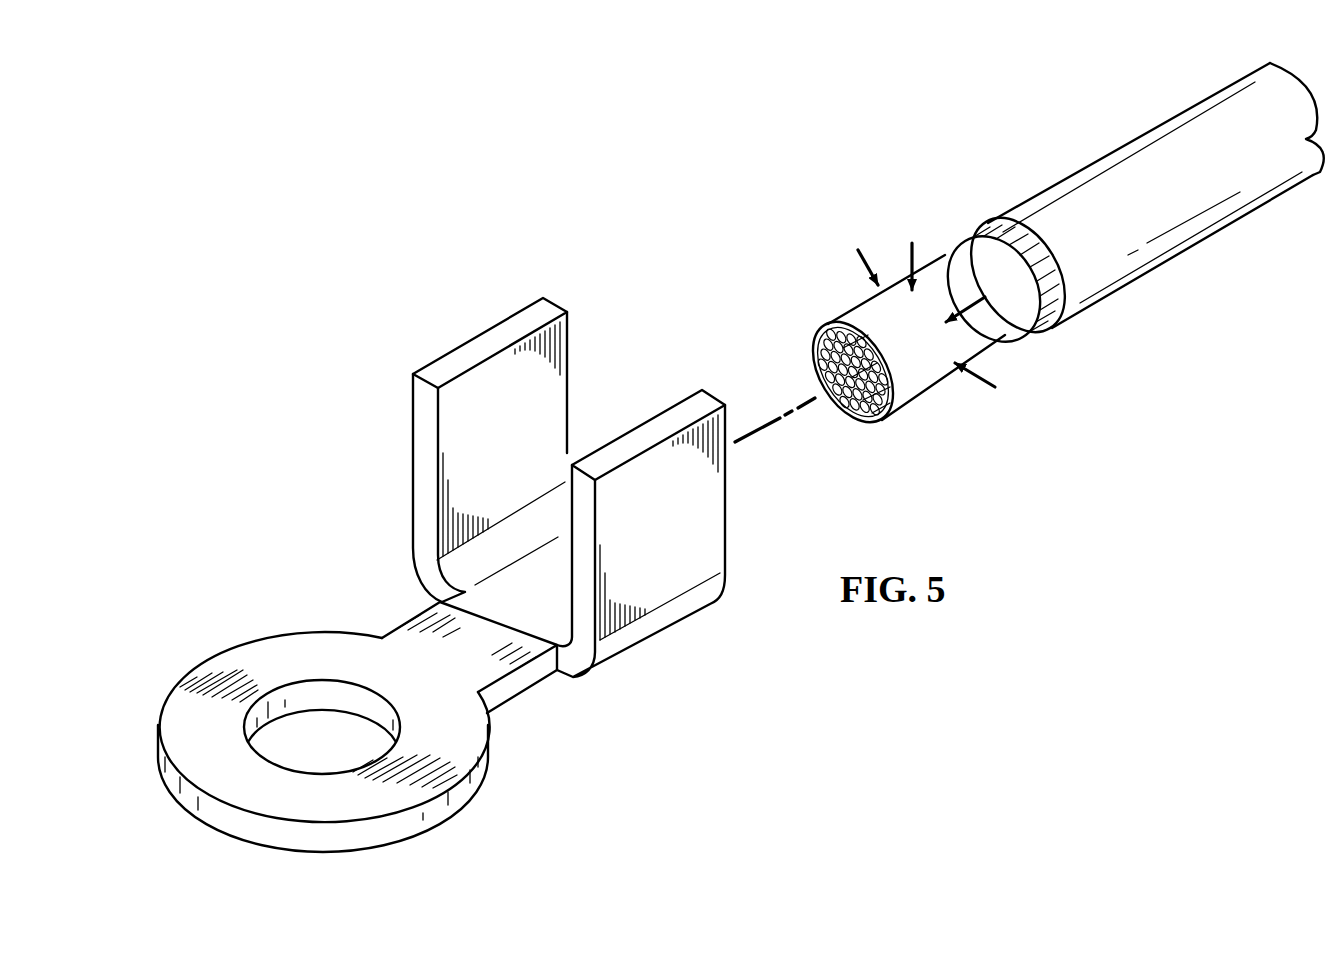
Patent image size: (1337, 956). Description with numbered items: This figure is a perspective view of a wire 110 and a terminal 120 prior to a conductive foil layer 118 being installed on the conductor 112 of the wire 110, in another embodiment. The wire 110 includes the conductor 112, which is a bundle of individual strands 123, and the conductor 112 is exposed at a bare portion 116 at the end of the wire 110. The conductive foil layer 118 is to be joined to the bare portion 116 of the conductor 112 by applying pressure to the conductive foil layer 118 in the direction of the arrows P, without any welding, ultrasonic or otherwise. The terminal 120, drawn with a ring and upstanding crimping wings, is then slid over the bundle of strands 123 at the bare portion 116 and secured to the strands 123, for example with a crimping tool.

The wire 110 is at (1244, 240).
The conductor 112 is at (1013, 340).
The bare portion 116 is at (784, 371).
The conductive foil layer 118 is at (853, 316).
The terminal 120 is at (262, 650).
The strands 123 is at (855, 423).